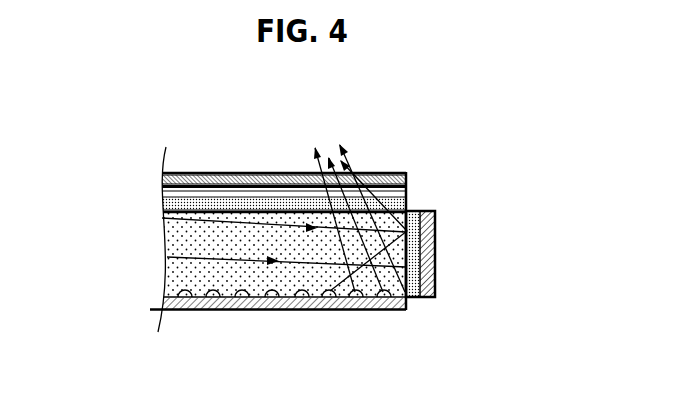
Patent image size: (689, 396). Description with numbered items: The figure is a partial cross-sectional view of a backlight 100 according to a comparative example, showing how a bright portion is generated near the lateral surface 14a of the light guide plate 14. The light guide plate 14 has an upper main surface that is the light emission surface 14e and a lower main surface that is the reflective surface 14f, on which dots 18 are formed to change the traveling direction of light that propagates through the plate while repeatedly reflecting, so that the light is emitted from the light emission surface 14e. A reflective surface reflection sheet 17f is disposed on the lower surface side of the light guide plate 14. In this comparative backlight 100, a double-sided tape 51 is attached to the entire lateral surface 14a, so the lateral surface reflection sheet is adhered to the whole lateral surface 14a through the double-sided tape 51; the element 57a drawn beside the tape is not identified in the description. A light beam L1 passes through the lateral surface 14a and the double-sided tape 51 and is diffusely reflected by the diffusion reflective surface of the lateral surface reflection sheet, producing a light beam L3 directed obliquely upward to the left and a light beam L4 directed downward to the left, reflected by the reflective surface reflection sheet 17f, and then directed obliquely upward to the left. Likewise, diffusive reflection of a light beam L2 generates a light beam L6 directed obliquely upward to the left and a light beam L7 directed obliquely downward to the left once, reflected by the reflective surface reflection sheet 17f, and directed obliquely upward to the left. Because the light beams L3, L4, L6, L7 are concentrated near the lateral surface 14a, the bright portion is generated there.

The backlight 100 is at (413, 153).
The double-sided tape 51 is at (418, 211).
The LED substrate 57a is at (436, 218).
The lateral surface 14a is at (404, 273).
The light guide plate 14 is at (178, 241).
The light emission surface 14e is at (218, 211).
The reflective surface 14f is at (241, 310).
The dots 18 is at (268, 310).
The reflective surface reflection sheet 17f is at (335, 310).
The light beam L1 is at (162, 218).
The light beam L2 is at (167, 259).
The light beam L3 is at (343, 160).
The light beam L4 is at (313, 149).
The light beam L6 is at (340, 145).
The light beam L7 is at (328, 157).